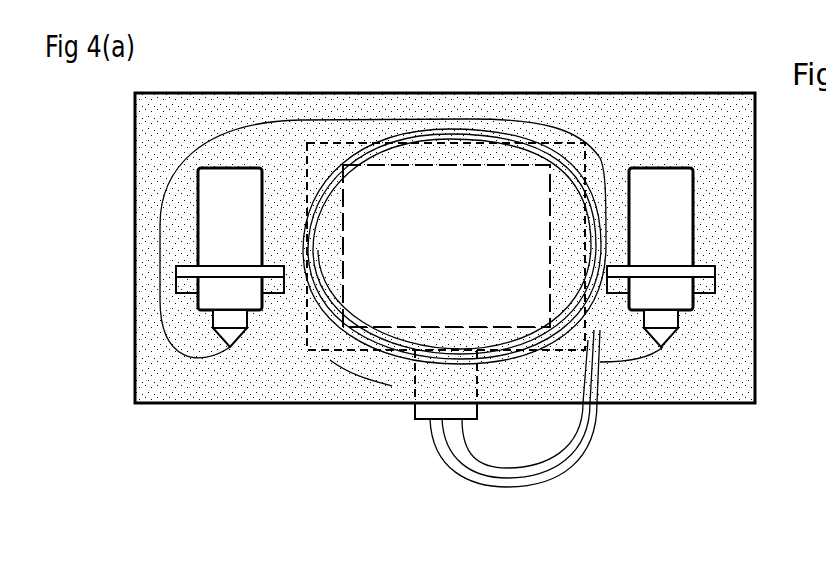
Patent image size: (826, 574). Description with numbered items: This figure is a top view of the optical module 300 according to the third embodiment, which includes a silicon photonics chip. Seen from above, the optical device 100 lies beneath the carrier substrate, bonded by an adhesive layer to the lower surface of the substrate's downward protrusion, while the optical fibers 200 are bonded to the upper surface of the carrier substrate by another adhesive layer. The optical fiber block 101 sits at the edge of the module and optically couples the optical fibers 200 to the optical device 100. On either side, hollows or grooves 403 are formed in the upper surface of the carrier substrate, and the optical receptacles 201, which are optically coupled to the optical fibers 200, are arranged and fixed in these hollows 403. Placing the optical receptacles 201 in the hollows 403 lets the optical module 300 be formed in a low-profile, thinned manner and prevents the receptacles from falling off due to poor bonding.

The optical module 300 is at (727, 71).
The optical receptacles 201 is at (230, 176).
The hollows (grooves) 403 is at (712, 287).
The optical device 100 is at (305, 358).
The optical fiber block 101 is at (413, 420).
The optical fibers 200 is at (517, 490).